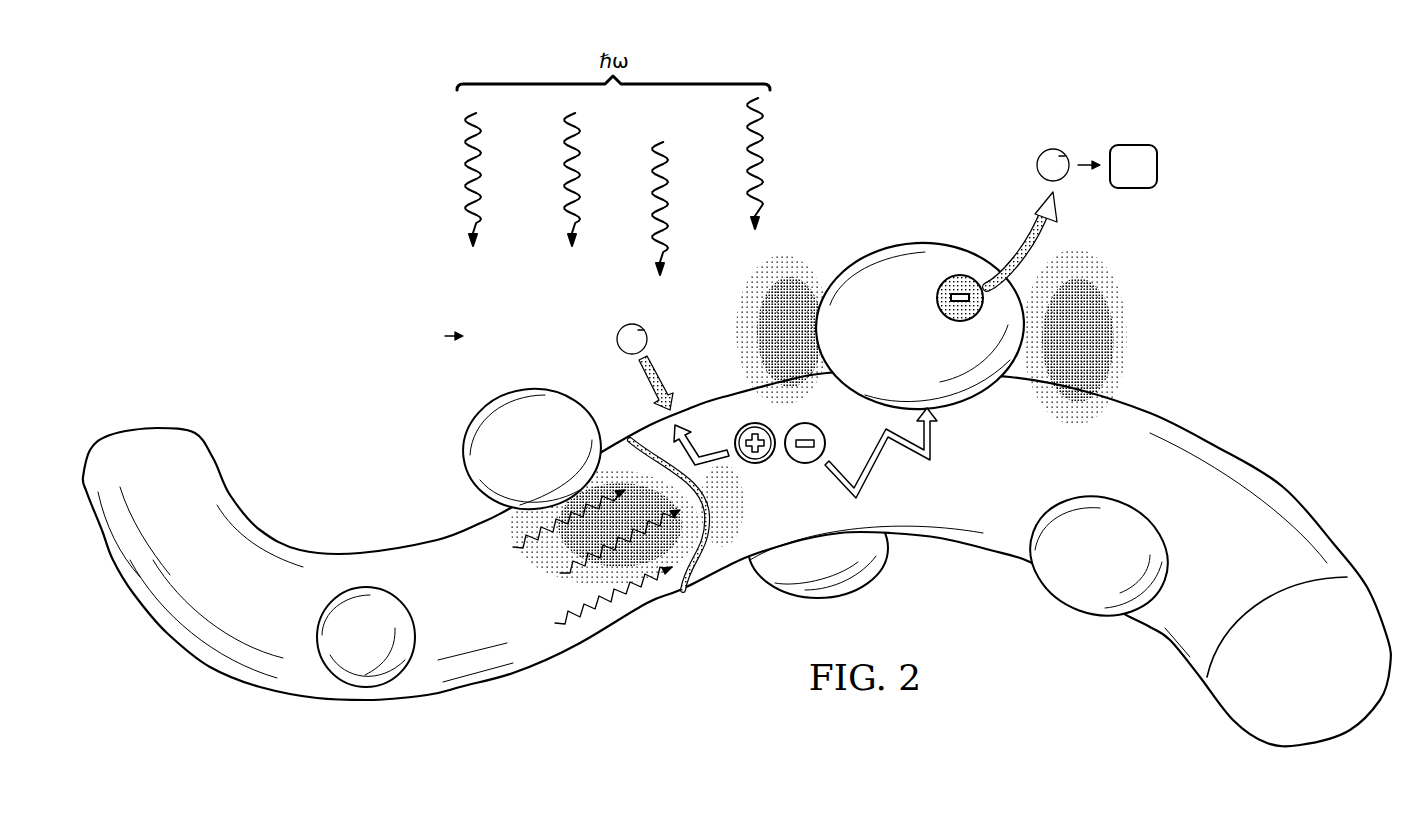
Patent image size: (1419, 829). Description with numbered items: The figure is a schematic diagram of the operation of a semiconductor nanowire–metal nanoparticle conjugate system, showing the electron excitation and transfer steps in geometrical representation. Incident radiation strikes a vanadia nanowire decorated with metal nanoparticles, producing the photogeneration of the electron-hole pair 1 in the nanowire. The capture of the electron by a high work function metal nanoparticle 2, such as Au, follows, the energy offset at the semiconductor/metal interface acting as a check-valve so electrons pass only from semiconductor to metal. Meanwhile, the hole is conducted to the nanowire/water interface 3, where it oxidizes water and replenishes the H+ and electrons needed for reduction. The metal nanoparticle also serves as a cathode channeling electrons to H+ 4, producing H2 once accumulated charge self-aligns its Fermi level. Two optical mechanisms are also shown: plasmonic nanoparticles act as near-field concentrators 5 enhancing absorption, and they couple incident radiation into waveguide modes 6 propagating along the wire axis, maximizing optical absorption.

The photogeneration of the electron-hole pair 1 is at (780, 471).
The capture of electron by metal nanoparticle 2 is at (906, 453).
The hole conduction to nanowire/water interface 3 is at (561, 391).
The electron channeling to H+ by metal nanoparticle cathode 4 is at (1047, 233).
The near-field concentration by plasmonic nanoparticles 5 is at (927, 337).
The coupling of incident radiation into nanowire waveguide modes 6 is at (507, 506).